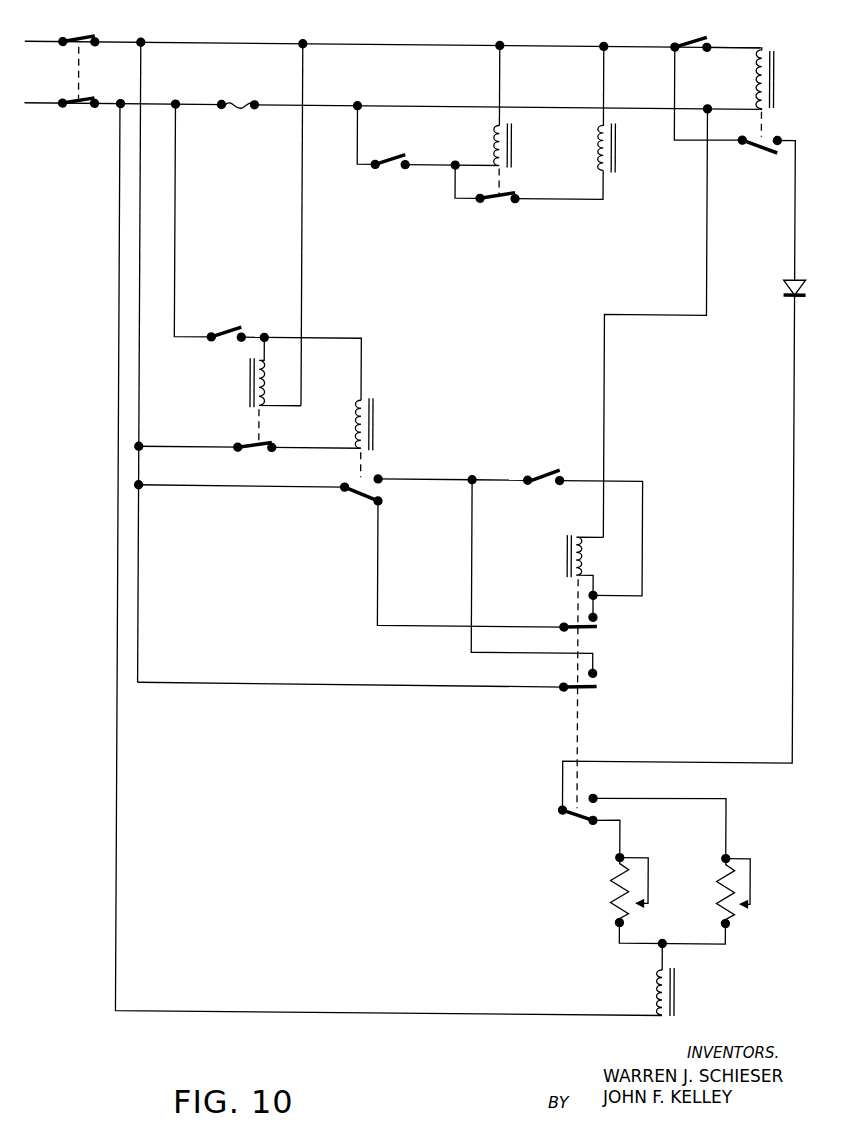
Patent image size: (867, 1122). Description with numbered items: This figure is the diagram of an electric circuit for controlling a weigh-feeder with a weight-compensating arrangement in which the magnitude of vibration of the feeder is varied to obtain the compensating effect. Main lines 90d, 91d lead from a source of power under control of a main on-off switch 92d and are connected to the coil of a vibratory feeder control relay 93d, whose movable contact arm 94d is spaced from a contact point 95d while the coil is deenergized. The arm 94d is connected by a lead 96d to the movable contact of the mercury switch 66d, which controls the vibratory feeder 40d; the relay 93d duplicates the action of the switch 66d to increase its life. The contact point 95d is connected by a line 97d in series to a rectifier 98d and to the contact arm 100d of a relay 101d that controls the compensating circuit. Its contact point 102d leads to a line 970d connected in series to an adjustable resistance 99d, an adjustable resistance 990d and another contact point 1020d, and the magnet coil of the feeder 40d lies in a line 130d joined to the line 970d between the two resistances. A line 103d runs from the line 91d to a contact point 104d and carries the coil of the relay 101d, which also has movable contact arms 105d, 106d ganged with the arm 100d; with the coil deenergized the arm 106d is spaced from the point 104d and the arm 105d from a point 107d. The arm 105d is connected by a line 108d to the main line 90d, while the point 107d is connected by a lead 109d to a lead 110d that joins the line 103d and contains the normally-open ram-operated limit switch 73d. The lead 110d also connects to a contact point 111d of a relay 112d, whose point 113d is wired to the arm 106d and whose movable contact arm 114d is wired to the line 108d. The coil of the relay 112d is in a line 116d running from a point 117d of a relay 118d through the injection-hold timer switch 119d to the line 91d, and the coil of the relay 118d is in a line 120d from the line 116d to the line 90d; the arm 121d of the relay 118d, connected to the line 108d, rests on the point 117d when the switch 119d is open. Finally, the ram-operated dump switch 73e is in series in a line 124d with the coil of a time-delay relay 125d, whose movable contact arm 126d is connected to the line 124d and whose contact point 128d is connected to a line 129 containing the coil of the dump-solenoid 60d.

The main line 90d is at (86, 30).
The main line 91d is at (82, 104).
The main on-off switch 92d is at (85, 60).
The line 124d is at (500, 76).
The time-delay relay 125d is at (512, 137).
The ram-operated dump switch 73e is at (391, 168).
The movable contact arm 126d is at (495, 198).
The contact point 128d is at (518, 196).
The line 129 is at (600, 196).
The dump-solenoid 60d is at (620, 148).
The lead 96d is at (673, 124).
The mercury switch 66d is at (683, 30).
The vibratory feeder control relay 93d is at (778, 78).
The contact point 95d is at (777, 128).
The movable contact arm 94d is at (770, 143).
The line 97d is at (795, 216).
The rectifier 98d is at (785, 283).
The line 116d is at (176, 236).
The line 120d is at (303, 288).
The timer switch 119d is at (225, 318).
The relay 118d is at (249, 378).
The relay 112d is at (380, 422).
The movable contact arm 121d is at (262, 444).
The contact point 117d is at (268, 455).
The contact point 111d is at (385, 470).
The lead 110d is at (440, 466).
The ram-operated limit switch 73d is at (548, 468).
The line 103d is at (606, 344).
The movable contact arm 114d is at (366, 504).
The contact point 113d is at (388, 500).
The lead 109d is at (480, 520).
The relay 101d is at (568, 550).
The contact point 104d is at (602, 612).
The movable contact arm 106d is at (600, 626).
The contact point 107d is at (602, 668).
The movable contact arm 105d is at (600, 686).
The line 108d is at (270, 681).
The line 130d is at (120, 513).
The contact point 1020d is at (600, 790).
The contact arm 100d is at (565, 806).
The contact point 102d is at (592, 820).
The adjustable resistance 99d is at (648, 860).
The adjustable resistance 990d is at (754, 866).
The line 970d is at (630, 945).
The vibratory feeder 40d is at (682, 990).